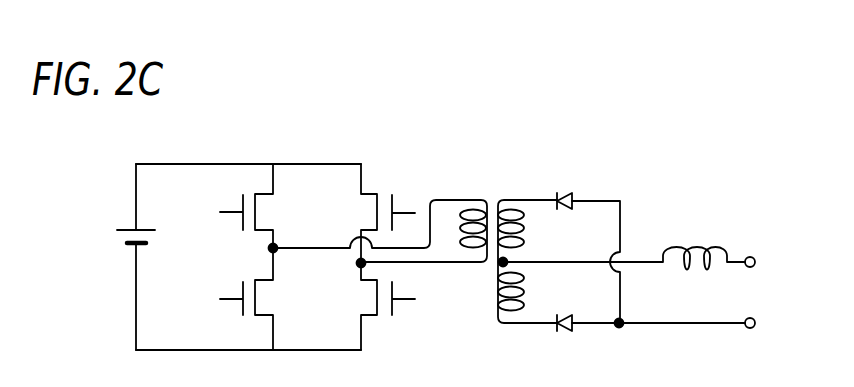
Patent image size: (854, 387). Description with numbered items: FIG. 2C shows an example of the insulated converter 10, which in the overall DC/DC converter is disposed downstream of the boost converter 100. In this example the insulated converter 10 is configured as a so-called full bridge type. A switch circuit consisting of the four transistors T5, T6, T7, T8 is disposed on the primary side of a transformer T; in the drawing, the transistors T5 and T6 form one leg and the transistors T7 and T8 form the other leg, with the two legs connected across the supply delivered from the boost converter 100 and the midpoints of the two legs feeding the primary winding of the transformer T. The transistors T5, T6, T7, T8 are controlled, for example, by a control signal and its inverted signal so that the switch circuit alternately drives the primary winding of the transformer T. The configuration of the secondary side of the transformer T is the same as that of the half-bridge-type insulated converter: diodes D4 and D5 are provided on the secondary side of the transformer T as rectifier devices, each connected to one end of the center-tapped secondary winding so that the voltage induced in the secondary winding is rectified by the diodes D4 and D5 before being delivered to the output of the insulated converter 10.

The insulated converter 10 is at (400, 155).
The boost converter 100 is at (123, 236).
The transistor T5 is at (242, 206).
The transistor T6 is at (242, 299).
The transistor T7 is at (393, 213).
The transistor T8 is at (393, 306).
The transformer T is at (492, 193).
The diode D4 is at (586, 245).
The diode D5 is at (648, 339).